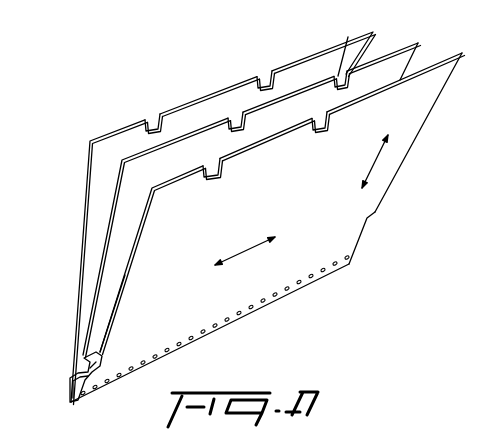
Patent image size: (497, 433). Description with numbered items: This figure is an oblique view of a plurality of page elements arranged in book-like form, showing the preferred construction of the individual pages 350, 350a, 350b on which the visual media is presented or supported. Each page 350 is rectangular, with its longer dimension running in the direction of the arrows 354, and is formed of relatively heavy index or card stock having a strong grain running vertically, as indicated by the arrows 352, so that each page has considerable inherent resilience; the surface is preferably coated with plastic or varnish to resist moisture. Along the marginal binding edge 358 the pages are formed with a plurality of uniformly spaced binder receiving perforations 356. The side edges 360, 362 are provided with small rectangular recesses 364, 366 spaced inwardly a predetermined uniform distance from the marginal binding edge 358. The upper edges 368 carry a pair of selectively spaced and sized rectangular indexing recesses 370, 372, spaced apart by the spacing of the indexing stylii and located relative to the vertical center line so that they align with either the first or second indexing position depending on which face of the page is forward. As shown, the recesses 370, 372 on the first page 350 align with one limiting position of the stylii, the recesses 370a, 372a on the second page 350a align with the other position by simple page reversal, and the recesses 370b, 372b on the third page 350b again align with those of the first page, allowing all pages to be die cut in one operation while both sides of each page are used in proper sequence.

The page 350 is at (143, 240).
The second page 350a is at (117, 190).
The third page 350b is at (89, 140).
The arrows 352 is at (377, 156).
The arrows 354 is at (244, 251).
The binder receiving perforations 356 is at (254, 303).
The marginal binding edge 358 is at (332, 268).
The side edge 360 is at (391, 185).
The side edge 362 is at (115, 290).
The rectangular recess 364 is at (362, 225).
The rectangular recess 366 is at (86, 360).
The upper edge 368 is at (390, 55).
The indexing recess 370 is at (221, 177).
The indexing recess 370a is at (348, 38).
The indexing recess 370b is at (149, 118).
The indexing recess 372 is at (327, 120).
The indexing recess 372a is at (232, 118).
The indexing recess 372b is at (259, 73).